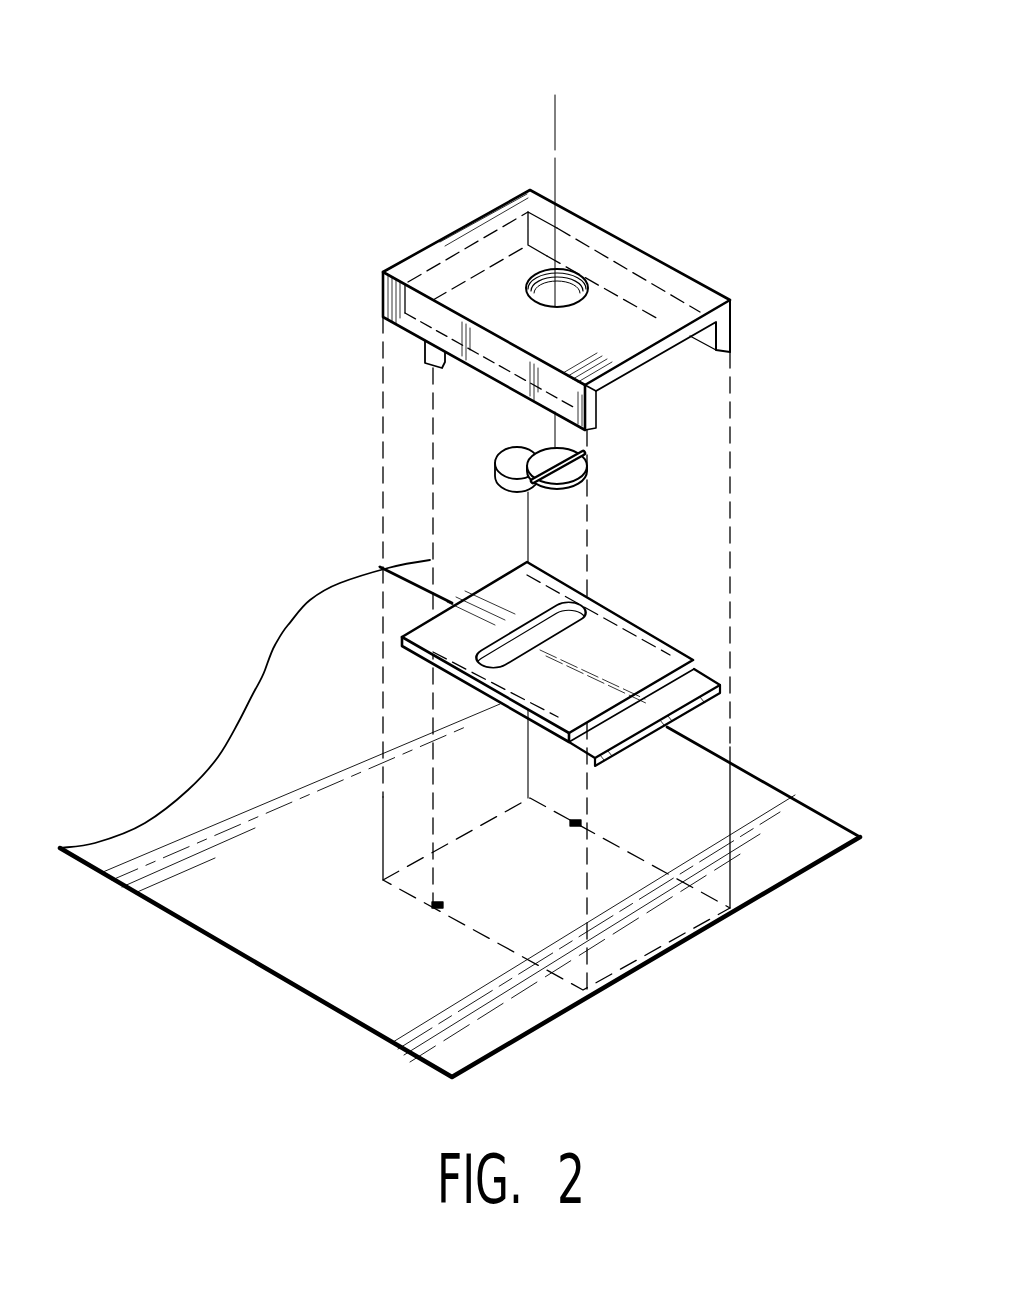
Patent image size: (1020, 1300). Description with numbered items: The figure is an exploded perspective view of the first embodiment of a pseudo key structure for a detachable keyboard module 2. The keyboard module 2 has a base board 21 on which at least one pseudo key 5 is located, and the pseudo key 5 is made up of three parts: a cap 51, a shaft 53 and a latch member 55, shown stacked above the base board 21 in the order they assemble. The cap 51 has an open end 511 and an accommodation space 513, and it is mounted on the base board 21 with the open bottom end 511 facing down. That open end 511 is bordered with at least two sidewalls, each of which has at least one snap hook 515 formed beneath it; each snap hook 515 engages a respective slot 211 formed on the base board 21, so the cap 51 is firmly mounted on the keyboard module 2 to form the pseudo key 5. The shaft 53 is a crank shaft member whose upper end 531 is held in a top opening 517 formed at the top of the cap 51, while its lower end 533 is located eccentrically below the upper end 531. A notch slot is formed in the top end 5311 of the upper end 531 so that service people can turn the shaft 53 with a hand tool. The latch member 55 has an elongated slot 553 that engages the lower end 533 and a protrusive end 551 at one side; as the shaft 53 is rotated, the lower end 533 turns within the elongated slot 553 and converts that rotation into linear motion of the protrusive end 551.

The keyboard module 2 is at (472, 706).
The base board 21 is at (530, 1008).
The slot 211 is at (430, 906).
The pseudo key 5 is at (458, 115).
The cap 51 is at (538, 300).
The open end 511 is at (484, 382).
The accommodation space 513 is at (653, 376).
The snap hook 515 is at (571, 265).
The top opening 517 is at (549, 268).
The shaft 53 is at (561, 535).
The upper end 531 is at (532, 480).
The top end 5311 is at (583, 458).
The lower end 533 is at (532, 492).
The latch member 55 is at (522, 654).
The protrusive end 551 is at (690, 688).
The elongated slot 553 is at (487, 652).